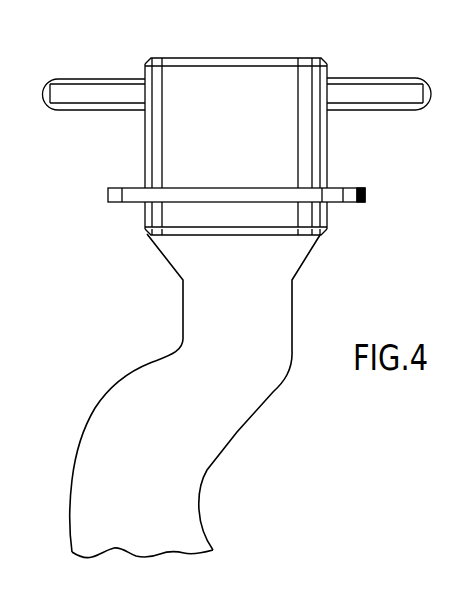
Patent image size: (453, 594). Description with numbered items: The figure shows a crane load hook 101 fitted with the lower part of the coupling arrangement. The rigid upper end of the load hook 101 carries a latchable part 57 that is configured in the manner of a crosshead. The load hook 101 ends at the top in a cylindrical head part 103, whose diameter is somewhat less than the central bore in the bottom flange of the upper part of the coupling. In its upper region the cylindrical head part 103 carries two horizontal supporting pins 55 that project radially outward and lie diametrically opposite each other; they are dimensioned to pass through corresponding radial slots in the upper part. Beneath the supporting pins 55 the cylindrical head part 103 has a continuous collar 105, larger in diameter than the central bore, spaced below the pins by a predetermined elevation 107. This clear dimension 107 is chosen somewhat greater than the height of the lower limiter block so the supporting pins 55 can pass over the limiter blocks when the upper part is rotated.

The supporting pins 55 is at (68, 101).
The latchable part 57 is at (342, 58).
The load hook 101 is at (104, 381).
The cylindrical head part 103 is at (202, 84).
The collar 105 is at (366, 190).
The elevation 107 is at (121, 141).